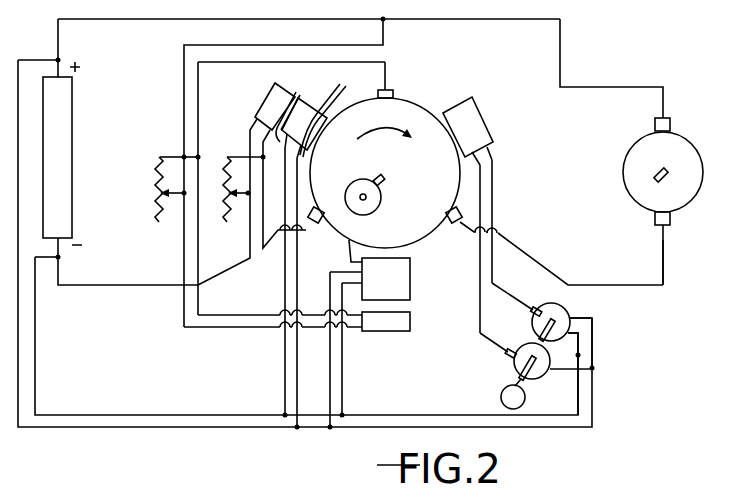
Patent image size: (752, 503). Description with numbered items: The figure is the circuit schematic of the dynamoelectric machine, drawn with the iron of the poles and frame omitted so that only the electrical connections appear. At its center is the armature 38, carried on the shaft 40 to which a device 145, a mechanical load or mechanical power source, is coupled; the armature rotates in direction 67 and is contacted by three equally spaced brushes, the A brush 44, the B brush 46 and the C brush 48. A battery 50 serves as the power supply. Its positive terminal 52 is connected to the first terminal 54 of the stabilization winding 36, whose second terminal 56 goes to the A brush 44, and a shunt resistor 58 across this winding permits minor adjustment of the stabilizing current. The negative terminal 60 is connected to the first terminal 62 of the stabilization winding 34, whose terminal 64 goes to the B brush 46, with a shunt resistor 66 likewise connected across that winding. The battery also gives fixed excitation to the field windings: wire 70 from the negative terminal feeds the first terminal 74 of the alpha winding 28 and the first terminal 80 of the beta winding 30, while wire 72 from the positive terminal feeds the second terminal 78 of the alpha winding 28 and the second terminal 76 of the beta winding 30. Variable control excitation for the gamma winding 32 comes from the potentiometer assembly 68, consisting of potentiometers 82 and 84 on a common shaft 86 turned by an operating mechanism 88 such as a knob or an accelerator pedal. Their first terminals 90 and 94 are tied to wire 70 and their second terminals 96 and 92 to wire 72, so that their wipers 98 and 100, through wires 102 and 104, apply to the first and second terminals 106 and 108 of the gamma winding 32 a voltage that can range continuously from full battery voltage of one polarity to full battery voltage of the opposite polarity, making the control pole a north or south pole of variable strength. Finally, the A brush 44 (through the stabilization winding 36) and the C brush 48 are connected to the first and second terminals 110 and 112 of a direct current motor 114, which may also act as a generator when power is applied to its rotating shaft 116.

The alpha winding 28 is at (312, 112).
The beta winding 30 is at (410, 290).
The gamma winding 32 is at (470, 117).
The stabilization winding 34 is at (272, 98).
The stabilization winding 36 is at (410, 322).
The armature 38 is at (407, 110).
The shaft 40 is at (382, 178).
The A brush 44 is at (392, 90).
The B brush 46 is at (318, 227).
The C brush 48 is at (456, 226).
The battery 50 is at (60, 177).
The positive terminal 52 is at (58, 60).
The first terminal 54 is at (353, 332).
The second terminal 56 is at (355, 310).
The shunt resistor 58 is at (170, 157).
The negative terminal 60 is at (58, 257).
The first terminal 62 is at (251, 128).
The second terminal 64 is at (264, 143).
The shunt resistor 66 is at (234, 156).
The direction of rotation 67 is at (410, 134).
The potentiometer assembly 68 is at (575, 342).
The wire 70 is at (35, 335).
The wire 72 is at (18, 383).
The first terminal 74 is at (291, 94).
The second terminal 76 is at (349, 259).
The second terminal 78 is at (322, 120).
The first terminal 80 is at (352, 285).
The potentiometer 82 is at (507, 358).
The potentiometer 84 is at (563, 316).
The common shaft 86 is at (535, 378).
The operating mechanism 88 is at (508, 396).
The first terminal 90 is at (578, 354).
The second terminal 92 is at (576, 320).
The first terminal 94 is at (592, 330).
The second terminal 96 is at (580, 372).
The wiper 98 is at (511, 352).
The wiper 100 is at (533, 308).
The wire 102 is at (481, 207).
The wire 104 is at (494, 183).
The first terminal 106 is at (493, 161).
The second terminal 108 is at (490, 143).
The first terminal 110 is at (663, 100).
The second terminal 112 is at (663, 245).
The direct current motor 114 is at (682, 153).
The rotating shaft 116 is at (666, 178).
The device 145 is at (373, 198).